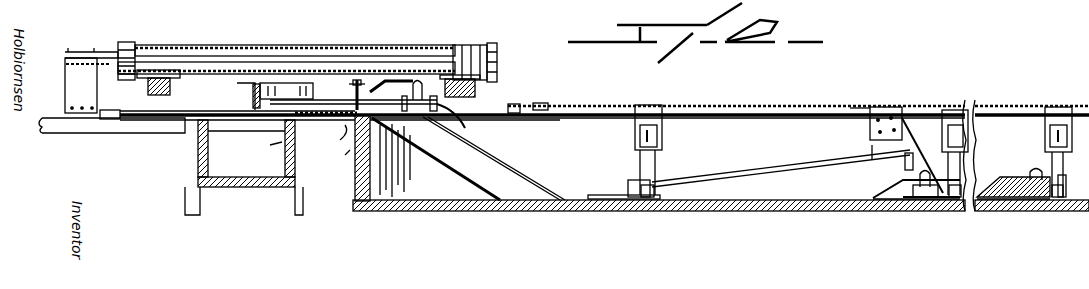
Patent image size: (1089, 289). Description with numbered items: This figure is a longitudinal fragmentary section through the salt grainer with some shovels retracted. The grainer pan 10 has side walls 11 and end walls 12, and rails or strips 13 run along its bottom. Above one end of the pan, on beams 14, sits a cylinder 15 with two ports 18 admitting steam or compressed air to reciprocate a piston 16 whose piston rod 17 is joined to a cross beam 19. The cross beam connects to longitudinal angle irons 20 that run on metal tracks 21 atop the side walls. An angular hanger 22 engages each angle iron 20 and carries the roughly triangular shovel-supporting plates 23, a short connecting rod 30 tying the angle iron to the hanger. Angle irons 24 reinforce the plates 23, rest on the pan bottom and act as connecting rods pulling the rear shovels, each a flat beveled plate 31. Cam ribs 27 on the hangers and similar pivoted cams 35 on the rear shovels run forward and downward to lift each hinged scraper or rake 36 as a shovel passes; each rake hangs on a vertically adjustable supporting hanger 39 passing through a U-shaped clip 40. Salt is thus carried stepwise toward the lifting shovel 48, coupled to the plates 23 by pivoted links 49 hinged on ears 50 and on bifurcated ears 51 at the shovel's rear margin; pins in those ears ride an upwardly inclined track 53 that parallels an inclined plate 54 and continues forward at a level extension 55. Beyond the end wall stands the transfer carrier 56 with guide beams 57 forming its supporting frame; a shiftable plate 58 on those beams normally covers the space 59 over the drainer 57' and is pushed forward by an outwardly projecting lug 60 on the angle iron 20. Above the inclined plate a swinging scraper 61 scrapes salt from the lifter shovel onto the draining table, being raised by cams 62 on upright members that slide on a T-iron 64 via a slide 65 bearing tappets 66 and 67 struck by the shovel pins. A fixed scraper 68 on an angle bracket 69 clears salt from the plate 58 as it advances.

The grainer pan 10 is at (425, 205).
The side walls 11 is at (716, 133).
The end walls 12 is at (355, 172).
The rails or strips 13 is at (775, 200).
The beams 14 is at (172, 88).
The cylinder 15 is at (242, 45).
The piston 16 is at (466, 45).
The piston rod 17 is at (315, 62).
The ports 18 is at (140, 46).
The cross beam 19 is at (65, 75).
The angle irons 20 is at (126, 110).
The metal tracks 21 is at (45, 128).
The angular hanger 22 is at (893, 108).
The shovel-supporting plates 23 is at (872, 146).
The angle irons 24 is at (967, 210).
The cam ribs 27 is at (900, 178).
The short connecting rod 30 is at (858, 107).
The flat plate 31 is at (890, 203).
The cams 35 is at (1005, 178).
The scraper or rake 36 is at (648, 200).
The supporting hanger 39 is at (950, 162).
The U-shaped clip 40 is at (1050, 145).
The lifting shovel 48 is at (592, 195).
The pivoted links 49 is at (765, 178).
The ears 50 is at (912, 160).
The ears 51 is at (632, 185).
The upwardly inclined track 53 is at (505, 170).
The inclined plate 54 is at (455, 176).
The forward track extension 55 is at (392, 125).
The transfer carrier 56 is at (245, 188).
The guide beams 57 is at (268, 147).
The drainer 57' is at (334, 161).
The shiftable plate 58 is at (353, 86).
The space 59 is at (345, 132).
The outwardly projecting lug 60 is at (514, 104).
The scraper 61 is at (353, 80).
The cams 62 is at (390, 80).
The T-iron 64 is at (286, 92).
The slide 65 is at (424, 93).
The tappet 66 is at (459, 120).
The tappet 67 is at (353, 103).
The fixed scraper 68 is at (248, 108).
The angle bracket 69 is at (255, 88).